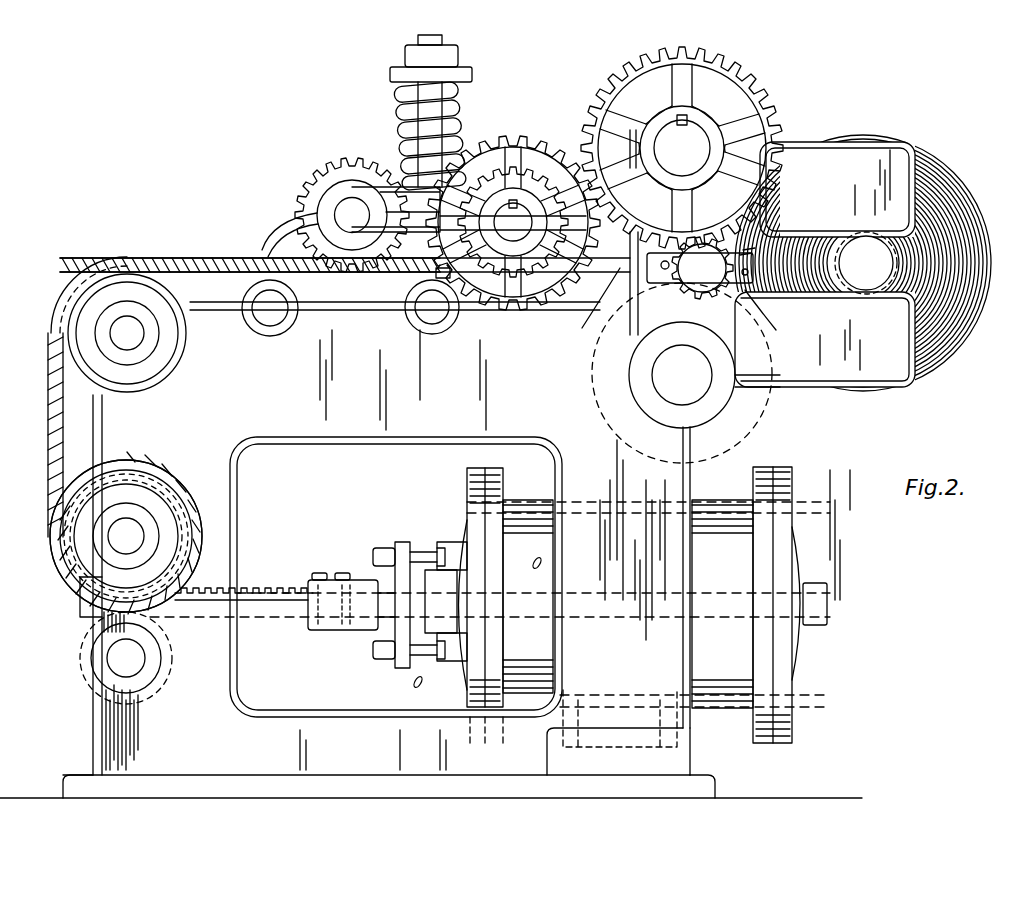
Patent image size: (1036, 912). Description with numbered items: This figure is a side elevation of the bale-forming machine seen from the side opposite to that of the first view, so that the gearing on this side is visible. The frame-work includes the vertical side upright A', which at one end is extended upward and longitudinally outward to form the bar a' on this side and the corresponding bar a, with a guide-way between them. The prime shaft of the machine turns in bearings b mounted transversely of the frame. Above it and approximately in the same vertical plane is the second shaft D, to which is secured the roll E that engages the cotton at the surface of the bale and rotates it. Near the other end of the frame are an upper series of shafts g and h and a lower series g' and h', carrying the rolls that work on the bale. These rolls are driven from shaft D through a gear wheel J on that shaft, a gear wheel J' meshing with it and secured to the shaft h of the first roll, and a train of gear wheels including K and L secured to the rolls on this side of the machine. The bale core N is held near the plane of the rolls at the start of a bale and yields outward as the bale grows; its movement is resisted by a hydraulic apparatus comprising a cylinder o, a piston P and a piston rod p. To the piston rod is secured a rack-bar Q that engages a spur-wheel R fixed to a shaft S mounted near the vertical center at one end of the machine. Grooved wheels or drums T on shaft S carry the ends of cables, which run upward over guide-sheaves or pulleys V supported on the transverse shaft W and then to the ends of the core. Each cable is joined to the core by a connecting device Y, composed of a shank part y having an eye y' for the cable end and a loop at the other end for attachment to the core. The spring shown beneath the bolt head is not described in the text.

The guide-sheaves or pulleys V is at (126, 262).
The shaft W is at (135, 340).
The grooved wheels or drums T is at (160, 490).
The spur-wheel R is at (190, 500).
The shaft S is at (112, 537).
The shaft g is at (347, 216).
The shaft g′ is at (273, 312).
The shaft h′ is at (440, 318).
The eye y′ is at (443, 277).
The gear wheel L is at (351, 199).
The gear wheel J′ is at (493, 137).
The gear wheel K is at (533, 180).
The shaft h is at (513, 222).
The gear wheel J is at (642, 63).
The roll E is at (720, 98).
The second shaft D is at (697, 157).
The connecting device Y is at (610, 232).
The shank part y is at (585, 310).
The bale core N is at (702, 268).
The bar a′ is at (893, 147).
The bar a is at (895, 367).
The bearings b is at (638, 385).
The side upright A′ is at (445, 474).
The rack-bar Q is at (396, 577).
The piston rod p is at (387, 600).
The cylinder o is at (476, 622).
The piston P is at (727, 550).
The element spring is at (431, 113).